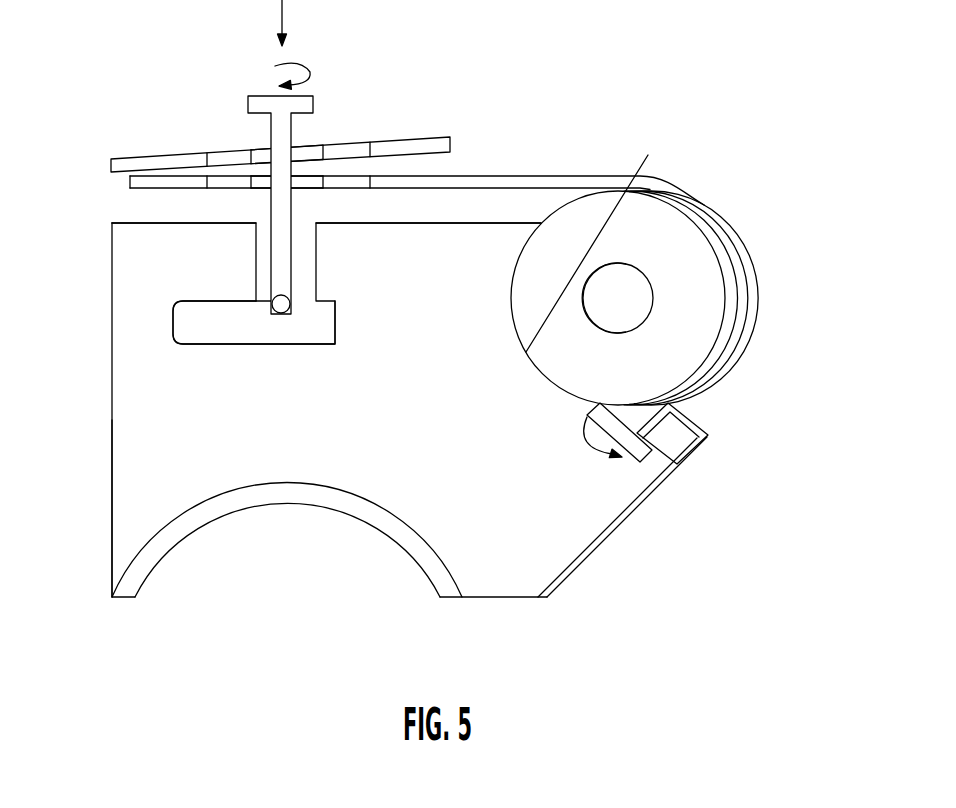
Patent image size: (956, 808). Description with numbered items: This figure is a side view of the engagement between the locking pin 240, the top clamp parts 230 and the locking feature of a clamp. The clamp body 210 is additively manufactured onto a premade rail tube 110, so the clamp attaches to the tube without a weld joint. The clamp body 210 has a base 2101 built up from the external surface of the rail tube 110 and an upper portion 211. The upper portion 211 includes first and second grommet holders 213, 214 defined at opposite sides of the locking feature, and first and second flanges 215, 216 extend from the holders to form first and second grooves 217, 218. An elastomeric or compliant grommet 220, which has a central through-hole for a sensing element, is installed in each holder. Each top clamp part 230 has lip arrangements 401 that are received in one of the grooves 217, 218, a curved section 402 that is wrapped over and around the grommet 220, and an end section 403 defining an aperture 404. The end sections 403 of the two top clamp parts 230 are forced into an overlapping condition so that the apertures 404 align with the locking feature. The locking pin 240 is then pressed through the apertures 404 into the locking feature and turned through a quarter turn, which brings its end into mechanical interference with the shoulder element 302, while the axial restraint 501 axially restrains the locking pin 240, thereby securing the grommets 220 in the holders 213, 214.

The rail tube 110 is at (137, 575).
The clamp body 210 is at (513, 606).
The upper portion 211 is at (123, 246).
The base 2101 is at (133, 517).
The first grommet holder 213 is at (615, 237).
The second grommet holder 214 is at (615, 237).
The first flange 215 is at (739, 433).
The second flange 216 is at (703, 435).
The first groove 217 is at (674, 517).
The second groove 218 is at (683, 458).
The grommet 220 is at (713, 297).
The top clamp part 230 is at (130, 159).
The locking pin 240 is at (258, 307).
The shoulder element 302 is at (216, 293).
The lip arrangement 401 is at (668, 408).
The curved section 402 is at (712, 224).
The end section 403 is at (163, 182).
The aperture 404 is at (260, 180).
The axial restraint 501 is at (330, 260).